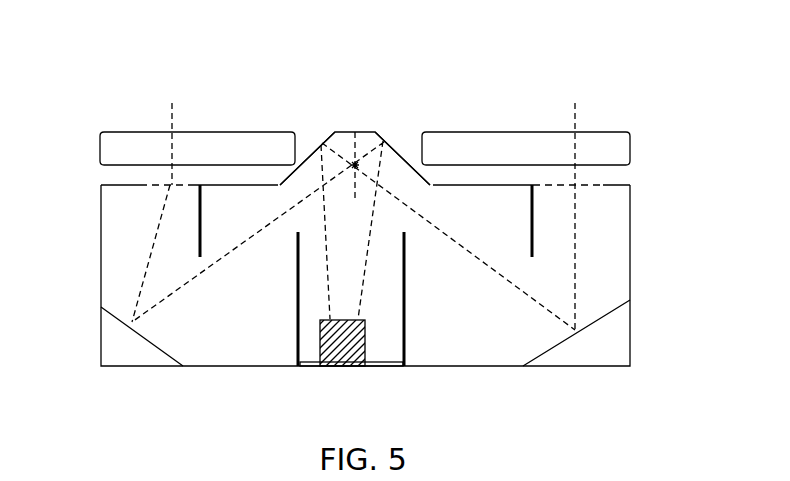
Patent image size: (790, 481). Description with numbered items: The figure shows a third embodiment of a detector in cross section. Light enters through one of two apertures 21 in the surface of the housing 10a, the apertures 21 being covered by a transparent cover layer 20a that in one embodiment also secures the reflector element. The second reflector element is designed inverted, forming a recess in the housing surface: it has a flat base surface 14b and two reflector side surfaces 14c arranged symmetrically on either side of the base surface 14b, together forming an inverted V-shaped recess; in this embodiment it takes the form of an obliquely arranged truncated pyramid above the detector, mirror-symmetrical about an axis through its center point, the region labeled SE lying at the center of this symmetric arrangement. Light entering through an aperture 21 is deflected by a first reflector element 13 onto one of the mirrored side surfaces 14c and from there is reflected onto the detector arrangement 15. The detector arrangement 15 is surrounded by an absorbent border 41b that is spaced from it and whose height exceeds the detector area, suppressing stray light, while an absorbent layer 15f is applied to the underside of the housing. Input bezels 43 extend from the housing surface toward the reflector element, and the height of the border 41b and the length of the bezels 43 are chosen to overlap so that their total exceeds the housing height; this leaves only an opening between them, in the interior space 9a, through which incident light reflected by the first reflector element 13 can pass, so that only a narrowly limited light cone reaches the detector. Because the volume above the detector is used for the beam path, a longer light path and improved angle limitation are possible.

The housing 10a is at (100, 248).
The transparent cover layer 20a is at (480, 143).
The aperture 21 is at (550, 173).
The base surface 14b is at (358, 132).
The reflector side surface 14c is at (281, 185).
The light emission point SE is at (353, 231).
The input bezel 43 is at (188, 252).
The absorbent border 41b is at (286, 275).
The absorbent layer 15f is at (307, 368).
The detector arrangement 15 is at (351, 361).
The first reflector element 13 is at (107, 341).
The internal space 9a is at (441, 294).